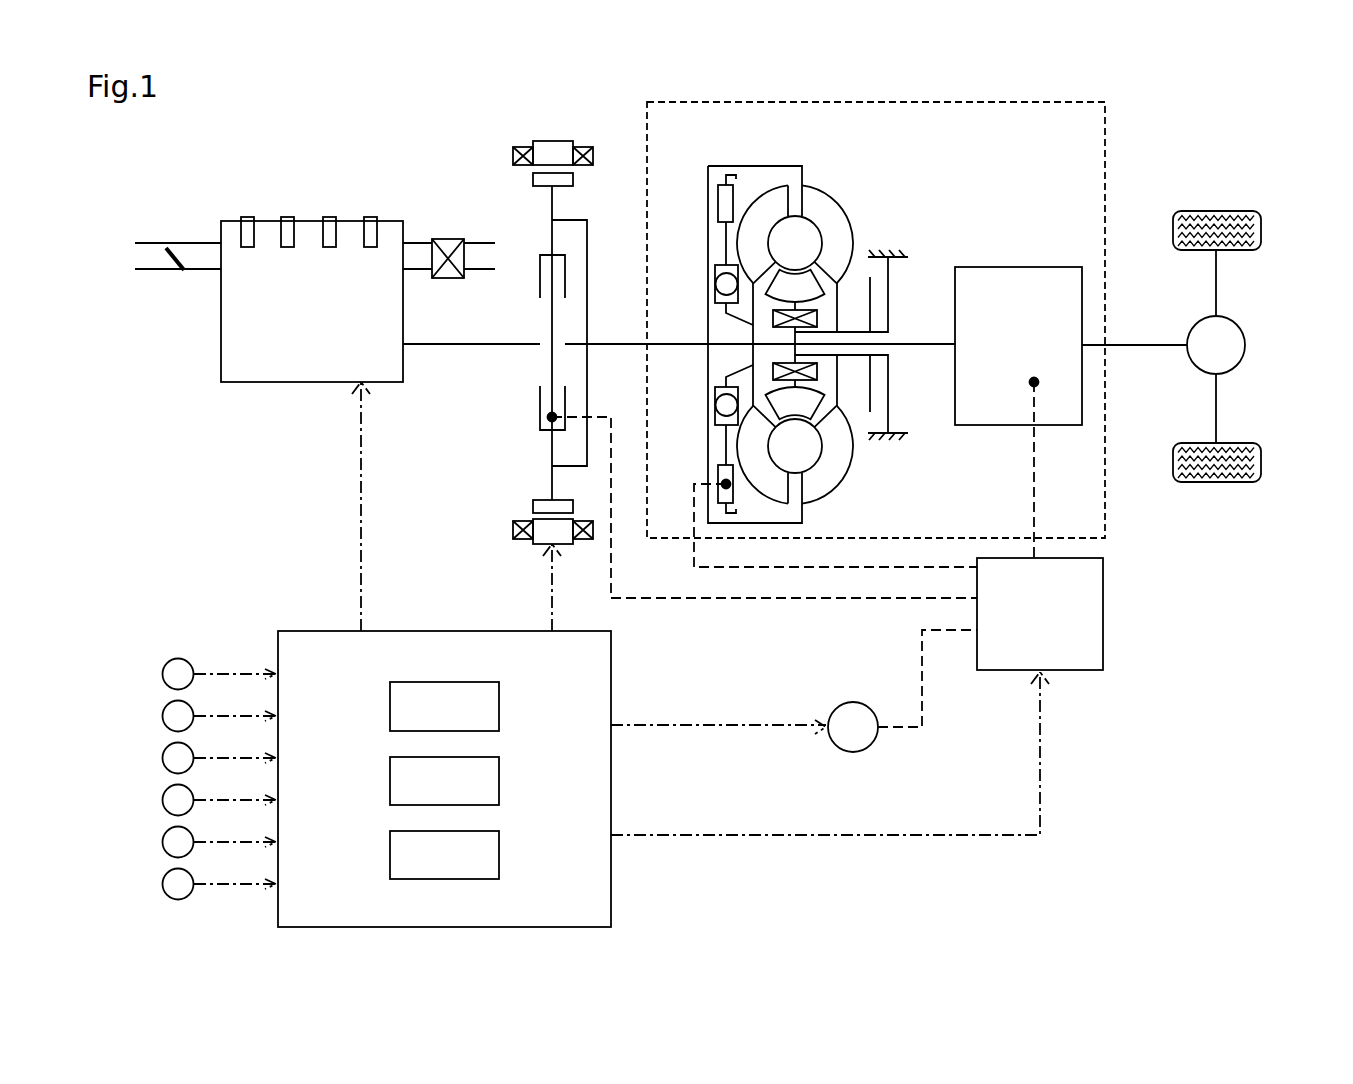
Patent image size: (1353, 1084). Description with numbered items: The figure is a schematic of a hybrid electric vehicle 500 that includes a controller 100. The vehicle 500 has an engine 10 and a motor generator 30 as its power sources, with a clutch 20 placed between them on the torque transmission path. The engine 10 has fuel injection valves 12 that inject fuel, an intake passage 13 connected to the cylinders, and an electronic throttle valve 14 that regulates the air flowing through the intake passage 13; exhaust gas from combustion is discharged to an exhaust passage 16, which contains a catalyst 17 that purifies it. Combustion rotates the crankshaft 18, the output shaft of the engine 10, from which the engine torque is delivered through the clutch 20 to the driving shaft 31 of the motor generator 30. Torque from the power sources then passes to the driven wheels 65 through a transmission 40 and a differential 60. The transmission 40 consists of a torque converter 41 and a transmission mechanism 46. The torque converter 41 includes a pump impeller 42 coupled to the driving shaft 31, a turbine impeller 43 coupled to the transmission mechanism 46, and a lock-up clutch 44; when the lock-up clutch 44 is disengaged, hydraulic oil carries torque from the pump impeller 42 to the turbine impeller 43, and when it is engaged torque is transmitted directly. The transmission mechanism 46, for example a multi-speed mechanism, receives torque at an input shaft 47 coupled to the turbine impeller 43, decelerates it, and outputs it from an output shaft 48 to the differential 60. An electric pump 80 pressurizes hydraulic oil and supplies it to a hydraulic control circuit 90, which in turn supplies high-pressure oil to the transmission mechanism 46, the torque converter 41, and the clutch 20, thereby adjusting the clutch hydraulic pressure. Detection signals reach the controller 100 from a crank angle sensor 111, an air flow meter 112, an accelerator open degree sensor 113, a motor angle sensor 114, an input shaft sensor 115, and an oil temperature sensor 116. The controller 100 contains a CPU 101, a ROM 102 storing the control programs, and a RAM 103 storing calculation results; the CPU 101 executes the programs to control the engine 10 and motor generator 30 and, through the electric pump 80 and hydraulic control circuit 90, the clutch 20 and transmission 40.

The engine 10 is at (203, 365).
The fuel injection valves 12 is at (247, 216).
The intake passage 13 is at (147, 242).
The electronic throttle valve 14 is at (178, 242).
The exhaust passage 16 is at (413, 242).
The catalyst 17 is at (450, 238).
The crankshaft 18 is at (508, 345).
The clutch 20 is at (540, 278).
The motor generator 30 is at (553, 140).
The driving shaft 31 is at (605, 344).
The transmission 40 is at (680, 102).
The torque converter 41 is at (778, 166).
The pump impeller 42 is at (851, 473).
The turbine impeller 43 is at (770, 484).
The lock-up clutch 44 is at (718, 200).
The transmission mechanism 46 is at (1020, 267).
The input shaft 47 is at (919, 344).
The output shaft 48 is at (1094, 341).
The differential 60 is at (1245, 346).
The driven wheels 65 is at (1285, 470).
The electric pump 80 is at (829, 712).
The hydraulic control circuit 90 is at (1105, 585).
The controller 100 is at (427, 631).
The CPU 101 is at (390, 706).
The ROM 102 is at (390, 780).
The RAM 103 is at (390, 854).
The crank angle sensor 111 is at (162, 674).
The air flow meter 112 is at (162, 716).
The accelerator open degree sensor 113 is at (162, 758).
The motor angle sensor 114 is at (162, 800).
The input shaft sensor 115 is at (162, 842).
The oil temperature sensor 116 is at (162, 884).
The hybrid electric vehicle 500 is at (961, 361).